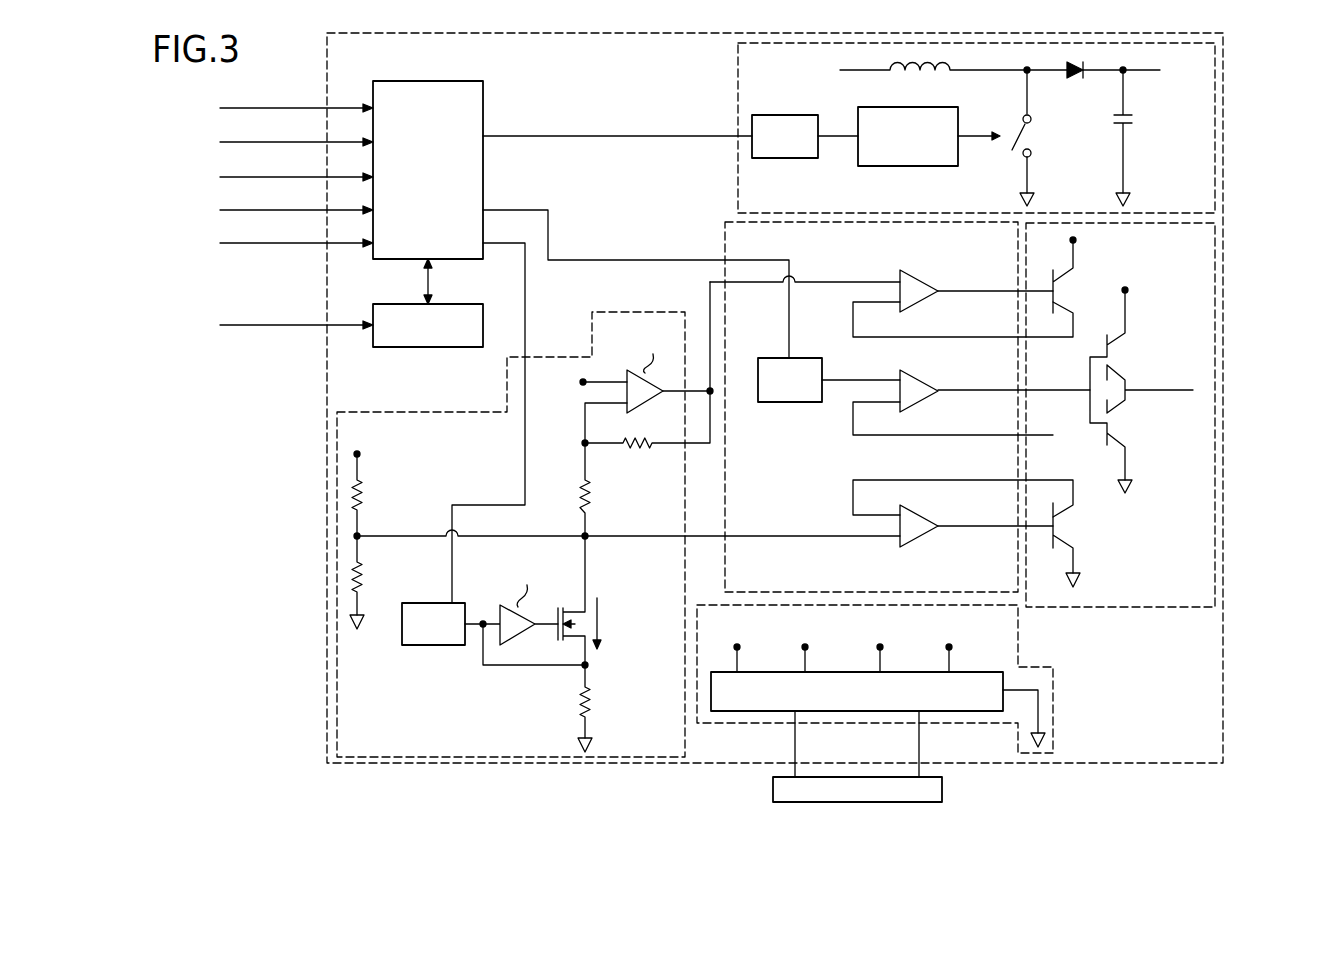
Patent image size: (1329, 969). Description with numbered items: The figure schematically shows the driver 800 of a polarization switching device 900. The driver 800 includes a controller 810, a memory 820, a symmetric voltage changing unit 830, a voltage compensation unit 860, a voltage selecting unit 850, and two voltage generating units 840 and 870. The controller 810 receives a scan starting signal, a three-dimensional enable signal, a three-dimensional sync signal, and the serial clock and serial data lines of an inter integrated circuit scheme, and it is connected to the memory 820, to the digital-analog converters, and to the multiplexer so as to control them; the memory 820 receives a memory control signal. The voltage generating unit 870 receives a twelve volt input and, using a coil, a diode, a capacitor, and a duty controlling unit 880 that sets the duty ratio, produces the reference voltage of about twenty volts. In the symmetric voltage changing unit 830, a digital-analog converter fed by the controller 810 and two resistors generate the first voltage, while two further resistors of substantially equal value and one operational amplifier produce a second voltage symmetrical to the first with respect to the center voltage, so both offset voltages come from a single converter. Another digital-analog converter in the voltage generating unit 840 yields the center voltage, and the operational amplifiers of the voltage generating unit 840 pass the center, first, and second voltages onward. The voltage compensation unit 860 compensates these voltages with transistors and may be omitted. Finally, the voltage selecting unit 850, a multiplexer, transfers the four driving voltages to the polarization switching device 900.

The driver 800 is at (1223, 103).
The controller 810 is at (483, 92).
The memory 820 is at (423, 347).
The symmetric voltage changing unit 830 is at (558, 357).
The voltage generating unit 840 is at (725, 233).
The voltage selecting unit 850 is at (1053, 693).
The voltage compensation unit 860 is at (1223, 250).
The voltage generating unit 870 is at (1215, 160).
The duty controlling unit 880 is at (890, 166).
The polarization switching device 900 is at (942, 790).